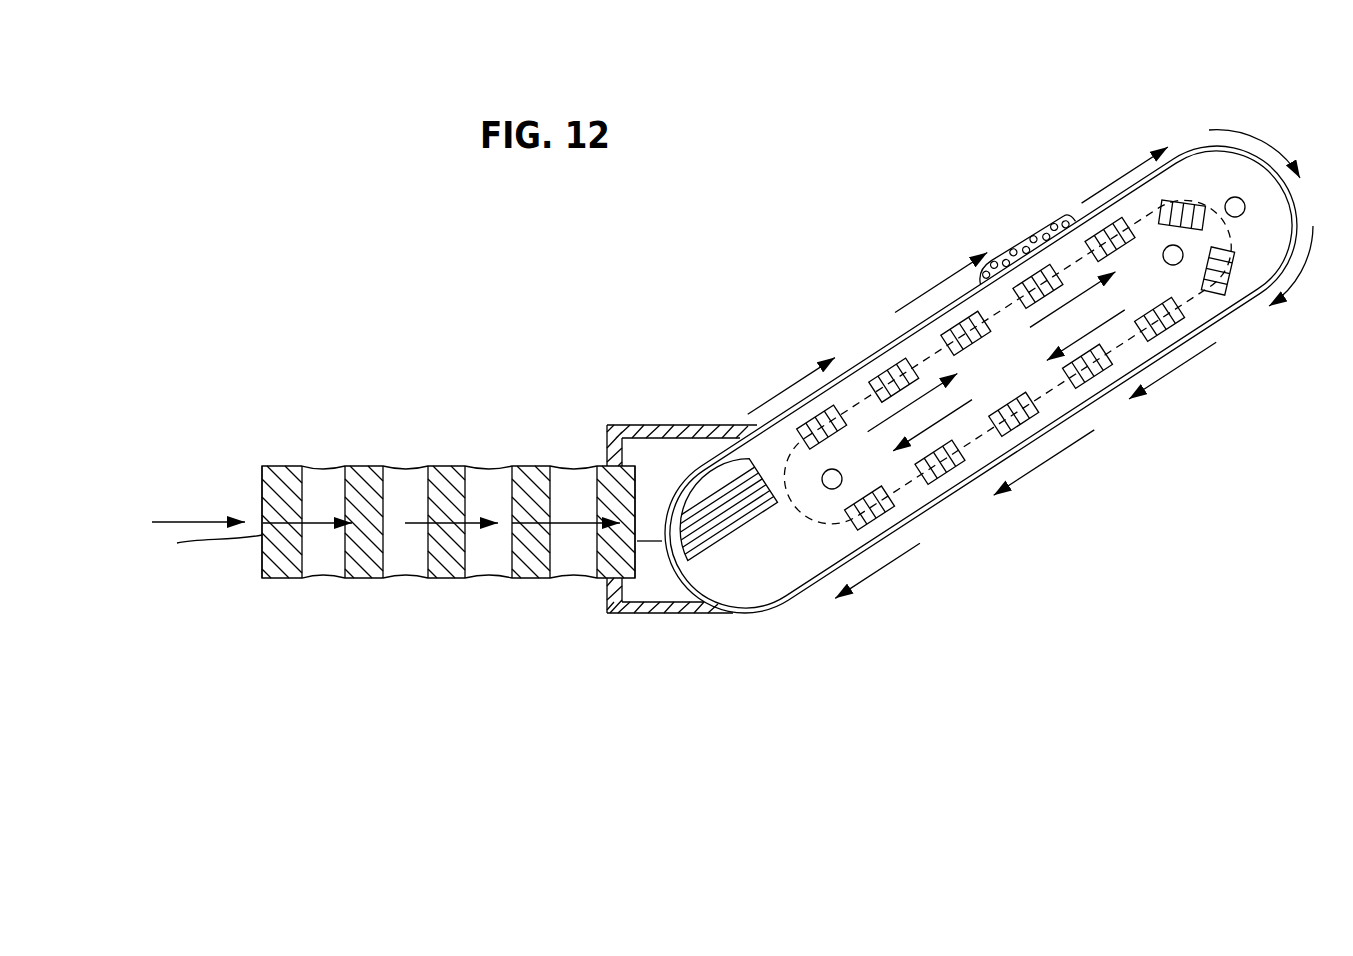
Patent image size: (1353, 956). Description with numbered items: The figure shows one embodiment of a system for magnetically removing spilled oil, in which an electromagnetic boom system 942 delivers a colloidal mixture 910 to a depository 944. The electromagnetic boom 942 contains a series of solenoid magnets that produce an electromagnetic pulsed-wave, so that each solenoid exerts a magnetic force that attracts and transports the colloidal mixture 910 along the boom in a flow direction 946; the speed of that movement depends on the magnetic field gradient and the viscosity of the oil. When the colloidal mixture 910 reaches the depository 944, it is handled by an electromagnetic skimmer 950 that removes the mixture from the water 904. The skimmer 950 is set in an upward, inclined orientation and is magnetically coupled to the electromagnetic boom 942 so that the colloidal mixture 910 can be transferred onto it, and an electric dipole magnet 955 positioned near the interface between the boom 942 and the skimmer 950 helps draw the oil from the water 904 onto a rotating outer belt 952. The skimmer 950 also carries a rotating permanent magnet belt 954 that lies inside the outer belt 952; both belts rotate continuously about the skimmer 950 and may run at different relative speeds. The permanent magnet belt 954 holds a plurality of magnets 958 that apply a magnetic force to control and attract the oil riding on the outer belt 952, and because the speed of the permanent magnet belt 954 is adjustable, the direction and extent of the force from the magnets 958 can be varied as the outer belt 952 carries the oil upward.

The water 904 is at (250, 537).
The electromagnetic boom system 942 is at (327, 466).
The flow direction 946 is at (405, 522).
The depository 944 is at (825, 203).
The rotating outer belt 952 is at (866, 352).
The electromagnetic skimmer 950 is at (1045, 483).
The rotating permanent magnet belt 954 is at (1218, 207).
The magnets 958 is at (1120, 222).
The colloidal mixture 910 is at (1029, 232).
The electric dipole magnet 955 is at (737, 537).